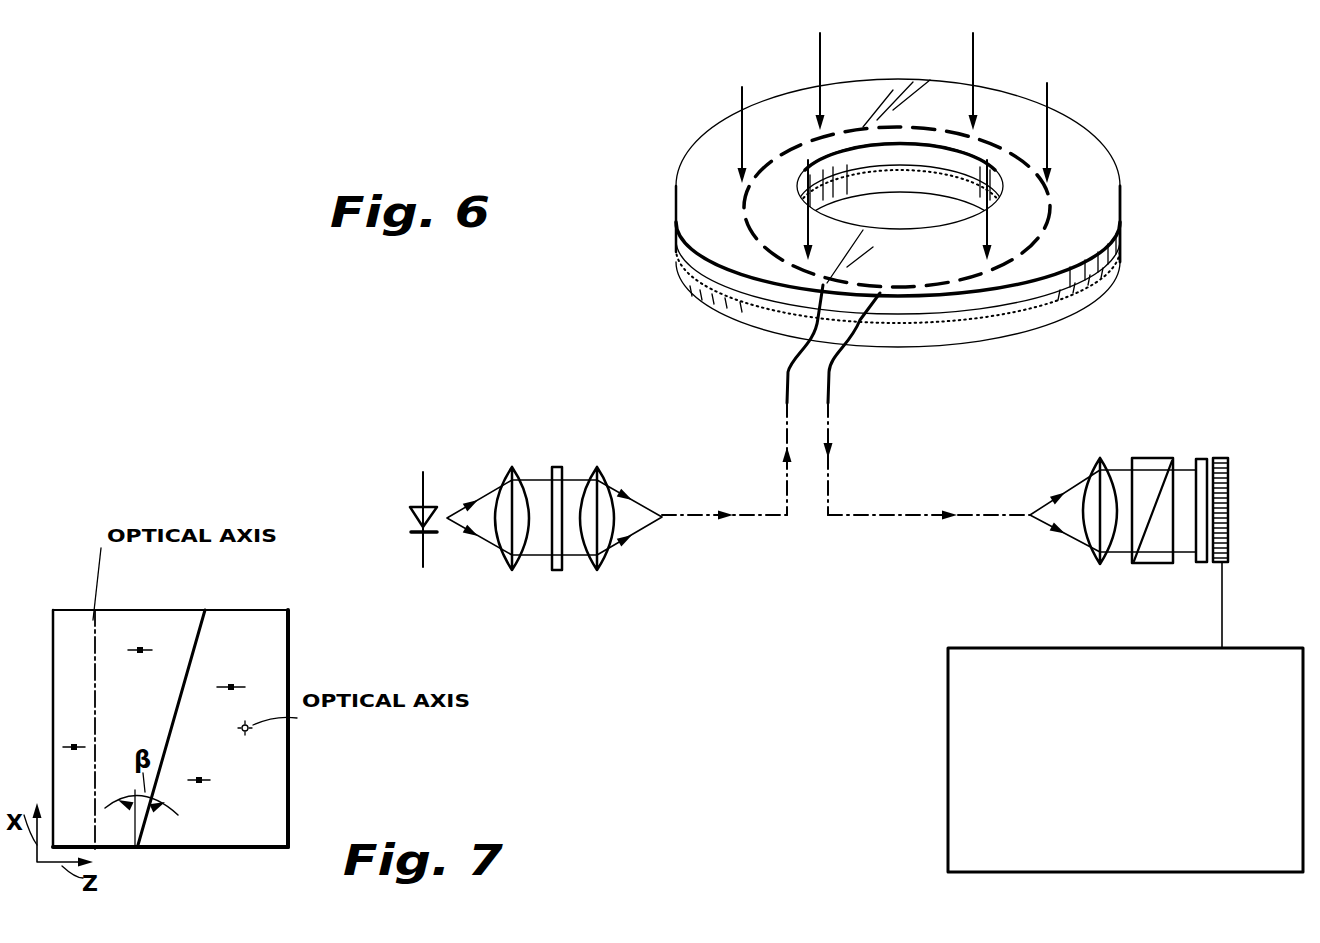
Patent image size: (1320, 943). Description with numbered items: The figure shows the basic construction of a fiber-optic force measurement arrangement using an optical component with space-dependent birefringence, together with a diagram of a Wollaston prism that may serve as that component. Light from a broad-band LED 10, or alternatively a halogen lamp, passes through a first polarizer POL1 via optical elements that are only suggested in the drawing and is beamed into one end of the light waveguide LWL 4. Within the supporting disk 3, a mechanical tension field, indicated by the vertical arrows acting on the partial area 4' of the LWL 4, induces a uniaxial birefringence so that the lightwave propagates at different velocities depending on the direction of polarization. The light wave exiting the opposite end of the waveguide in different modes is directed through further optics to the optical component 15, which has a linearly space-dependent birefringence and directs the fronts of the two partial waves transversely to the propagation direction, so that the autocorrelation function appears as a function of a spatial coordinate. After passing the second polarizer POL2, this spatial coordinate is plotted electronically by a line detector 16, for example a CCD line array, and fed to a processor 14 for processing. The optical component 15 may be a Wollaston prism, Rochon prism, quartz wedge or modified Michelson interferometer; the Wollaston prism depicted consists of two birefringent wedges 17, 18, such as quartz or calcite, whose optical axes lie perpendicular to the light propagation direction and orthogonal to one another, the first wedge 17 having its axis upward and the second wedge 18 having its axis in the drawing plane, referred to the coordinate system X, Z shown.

In FIG. 6, the supporting disk 3 is at (1123, 195).
In FIG. 6, the partial area of the LWL 4' is at (838, 207).
In FIG. 6, the LWL (light waveguide) 4 is at (836, 400).
In FIG. 6, the broad-band LED 10 is at (422, 507).
In FIG. 6, the processor 14 is at (955, 692).
In FIG. 6, the optical component with linearly space-dependent birefringence 15 is at (1153, 463).
In FIG. 6, the line detector 16 is at (1227, 553).
In FIG. 7, the first birefringent wedge 17 is at (140, 628).
In FIG. 7, the second birefringent wedge 18 is at (250, 632).
In FIG. 6, the polarizer POL1 is at (555, 467).
In FIG. 6, the polarizer POL2 is at (1202, 460).